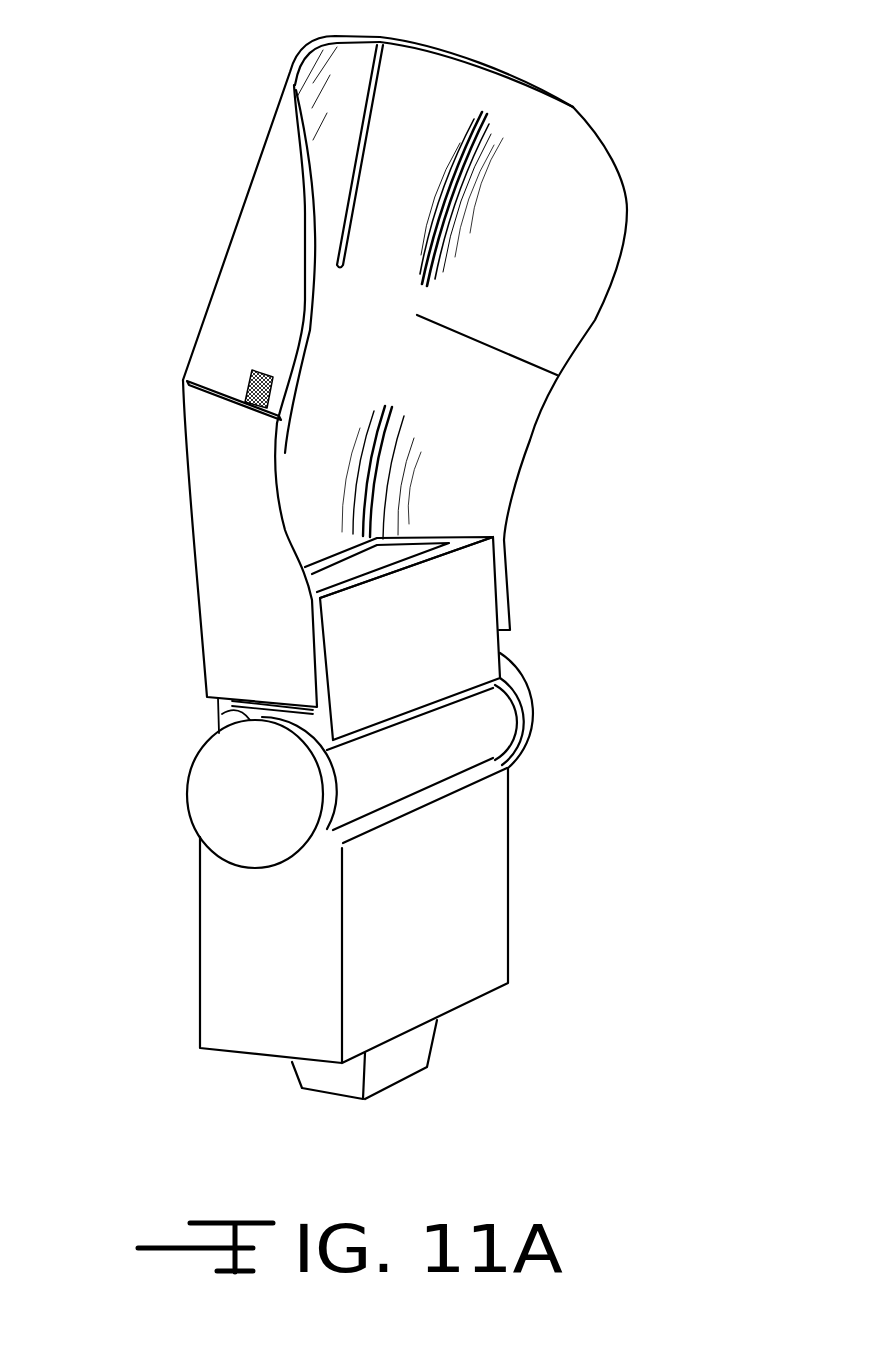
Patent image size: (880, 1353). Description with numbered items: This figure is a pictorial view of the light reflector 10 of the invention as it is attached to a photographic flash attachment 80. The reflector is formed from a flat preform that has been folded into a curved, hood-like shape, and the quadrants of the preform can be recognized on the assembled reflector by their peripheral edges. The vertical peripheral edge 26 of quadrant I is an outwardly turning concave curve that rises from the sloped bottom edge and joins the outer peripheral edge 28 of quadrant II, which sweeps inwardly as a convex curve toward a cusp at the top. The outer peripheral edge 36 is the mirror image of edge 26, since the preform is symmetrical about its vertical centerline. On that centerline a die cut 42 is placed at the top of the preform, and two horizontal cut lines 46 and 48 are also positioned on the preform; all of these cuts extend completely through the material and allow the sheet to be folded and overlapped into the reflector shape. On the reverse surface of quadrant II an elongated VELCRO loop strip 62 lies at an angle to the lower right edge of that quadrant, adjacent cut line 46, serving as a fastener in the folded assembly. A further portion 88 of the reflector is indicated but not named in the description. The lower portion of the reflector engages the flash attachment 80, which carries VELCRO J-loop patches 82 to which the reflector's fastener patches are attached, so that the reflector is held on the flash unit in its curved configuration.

The light reflector 10 is at (652, 180).
The vertical peripheral edge 26 is at (272, 500).
The outer peripheral edge 28 is at (305, 213).
The outer peripheral edge 36 is at (530, 440).
The die cut 42 is at (367, 143).
The horizontal cut line 46 is at (226, 405).
The horizontal cut line 48 is at (490, 345).
The elongated VELCRO loop strip 62 is at (253, 370).
The photographic flash attachment 80 is at (522, 902).
The VELCRO J-loop patches 82 is at (218, 722).
The dome section 88 is at (573, 107).